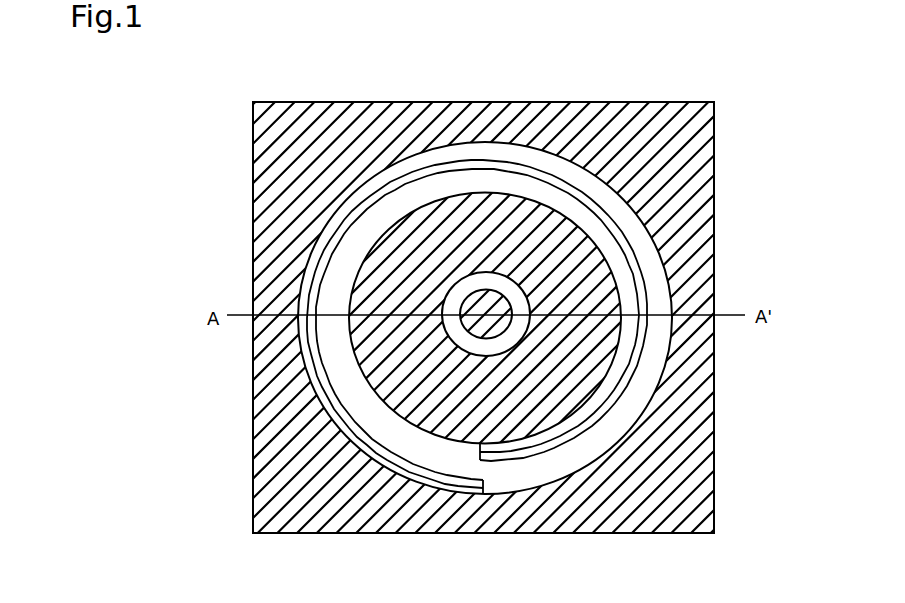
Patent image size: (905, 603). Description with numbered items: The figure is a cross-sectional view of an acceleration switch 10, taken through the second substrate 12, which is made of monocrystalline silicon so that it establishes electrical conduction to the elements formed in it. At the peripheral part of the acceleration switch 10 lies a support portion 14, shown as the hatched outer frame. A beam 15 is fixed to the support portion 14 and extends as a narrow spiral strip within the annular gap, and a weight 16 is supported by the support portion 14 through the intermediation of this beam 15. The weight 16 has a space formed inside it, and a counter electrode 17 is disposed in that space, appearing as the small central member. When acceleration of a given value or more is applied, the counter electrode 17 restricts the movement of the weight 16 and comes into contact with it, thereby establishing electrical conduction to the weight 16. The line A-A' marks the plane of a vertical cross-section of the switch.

The acceleration switch 10 is at (718, 148).
The second substrate 12 is at (678, 218).
The support portion 14 is at (546, 318).
The beam 15 is at (648, 272).
The weight 16 is at (600, 345).
The counter electrode 17 is at (497, 325).